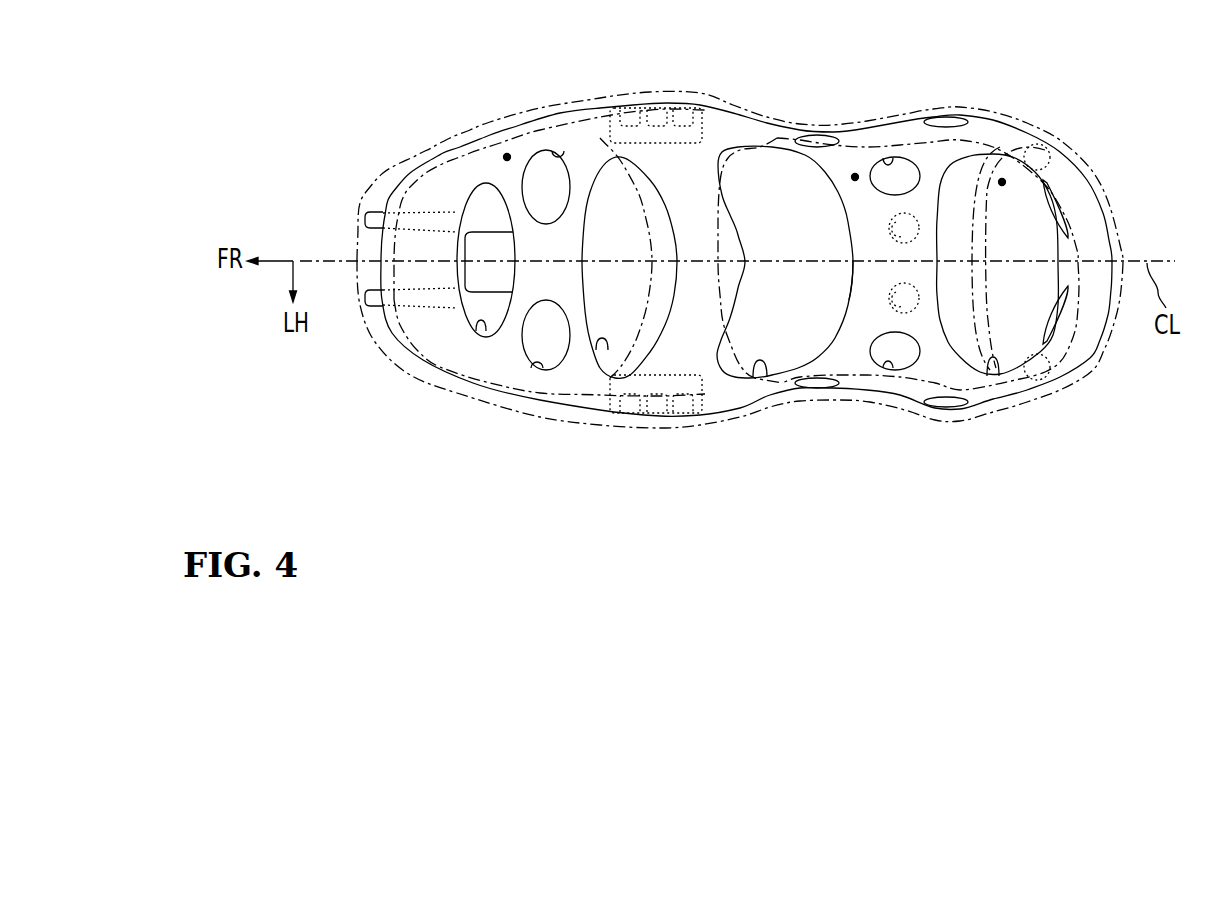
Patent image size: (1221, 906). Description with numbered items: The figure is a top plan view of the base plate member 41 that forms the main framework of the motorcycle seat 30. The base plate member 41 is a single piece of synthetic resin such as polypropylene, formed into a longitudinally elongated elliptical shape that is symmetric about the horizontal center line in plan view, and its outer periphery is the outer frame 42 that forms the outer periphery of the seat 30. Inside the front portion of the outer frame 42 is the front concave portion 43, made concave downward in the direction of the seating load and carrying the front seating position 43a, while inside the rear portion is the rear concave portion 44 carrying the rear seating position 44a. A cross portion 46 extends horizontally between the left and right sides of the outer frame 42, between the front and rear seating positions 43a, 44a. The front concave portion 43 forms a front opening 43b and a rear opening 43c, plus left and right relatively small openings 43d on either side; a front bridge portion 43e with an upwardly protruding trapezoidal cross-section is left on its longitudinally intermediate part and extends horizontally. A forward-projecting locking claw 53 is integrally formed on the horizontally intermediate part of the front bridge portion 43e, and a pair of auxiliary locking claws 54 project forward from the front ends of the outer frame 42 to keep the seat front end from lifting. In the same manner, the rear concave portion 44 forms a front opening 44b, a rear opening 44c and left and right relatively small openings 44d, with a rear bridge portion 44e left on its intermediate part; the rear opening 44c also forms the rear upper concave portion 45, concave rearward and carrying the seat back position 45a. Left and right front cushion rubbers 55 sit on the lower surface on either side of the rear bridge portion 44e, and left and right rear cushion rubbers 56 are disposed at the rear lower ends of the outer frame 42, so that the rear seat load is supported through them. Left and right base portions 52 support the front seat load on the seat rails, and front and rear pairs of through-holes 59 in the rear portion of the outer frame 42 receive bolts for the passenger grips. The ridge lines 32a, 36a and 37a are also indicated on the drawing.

The seat 30 is at (380, 157).
The base plate member 41 is at (744, 249).
The outer frame 42 is at (428, 153).
The front concave portion 43 is at (507, 157).
The front seating position 43a is at (533, 128).
The front opening 43b is at (482, 330).
The rear opening 43c is at (600, 348).
The relatively-small openings 43d is at (558, 150).
The front bridge portion 43e is at (570, 276).
The front cover ridge 32a is at (570, 190).
The middle cover ridge 36a is at (782, 195).
The rear cover ridge 37a is at (1047, 202).
The rear concave portion 44 is at (855, 176).
The rear seating position 44a is at (777, 137).
The front opening 44b is at (757, 378).
The rear opening 44c is at (993, 375).
The relatively-small openings 44d is at (888, 157).
The rear bridge portion 44e is at (858, 289).
The rear upper concave portion 45 is at (1002, 181).
The seat back position 45a is at (1020, 130).
The cross portion 46 is at (738, 240).
The base portions 52 is at (659, 130).
The locking claw 53 is at (480, 278).
The auxiliary locking claws 54 is at (366, 218).
The front cushion rubbers 55 is at (893, 290).
The rear cushion rubbers 56 is at (1048, 150).
The through-holes 59 is at (816, 135).